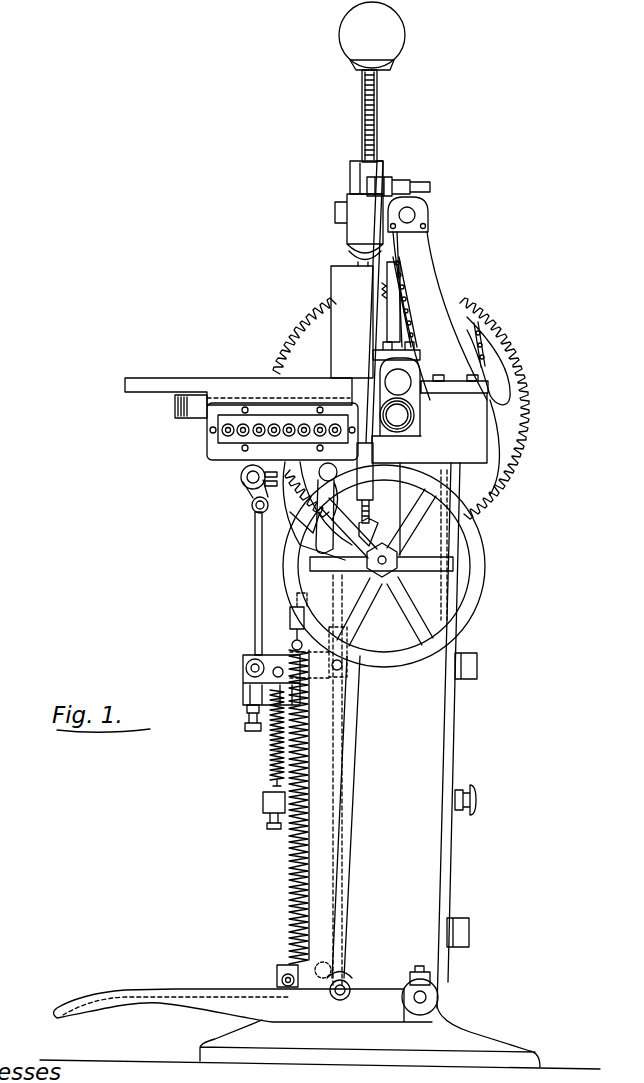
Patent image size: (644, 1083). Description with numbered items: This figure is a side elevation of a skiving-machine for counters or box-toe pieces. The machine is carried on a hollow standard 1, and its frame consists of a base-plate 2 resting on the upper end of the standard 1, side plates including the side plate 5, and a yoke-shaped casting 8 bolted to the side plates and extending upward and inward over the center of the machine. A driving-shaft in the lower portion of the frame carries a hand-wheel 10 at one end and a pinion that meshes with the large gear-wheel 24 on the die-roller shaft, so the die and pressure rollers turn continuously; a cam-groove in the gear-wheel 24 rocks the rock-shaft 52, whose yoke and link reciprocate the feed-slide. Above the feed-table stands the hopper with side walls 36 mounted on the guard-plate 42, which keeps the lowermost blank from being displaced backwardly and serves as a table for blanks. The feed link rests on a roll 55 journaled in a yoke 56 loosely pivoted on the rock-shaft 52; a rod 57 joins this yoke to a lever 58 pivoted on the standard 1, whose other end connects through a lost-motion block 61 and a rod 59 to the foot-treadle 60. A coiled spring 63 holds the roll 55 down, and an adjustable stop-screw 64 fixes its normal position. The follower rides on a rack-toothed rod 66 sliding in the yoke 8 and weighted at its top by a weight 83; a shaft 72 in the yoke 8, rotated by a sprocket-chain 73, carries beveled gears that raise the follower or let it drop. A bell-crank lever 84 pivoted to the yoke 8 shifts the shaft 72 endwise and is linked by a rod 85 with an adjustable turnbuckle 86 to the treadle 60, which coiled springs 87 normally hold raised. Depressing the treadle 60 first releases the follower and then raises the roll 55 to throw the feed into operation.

The hollow case or standard 1 is at (455, 760).
The base-plate 2 is at (429, 573).
The side plate 5 is at (432, 540).
The yoke-shaped casting 8 is at (440, 263).
The hand-wheel 10 is at (471, 582).
The large gear-wheel 24 is at (520, 411).
The side walls 36 is at (336, 278).
The guard-plate 42 is at (200, 385).
The rock-shaft 52 is at (330, 481).
The roll 55 is at (245, 483).
The yoke 56 is at (255, 506).
The rod 57 is at (256, 551).
The lever 58 is at (262, 661).
The rod 59 is at (335, 804).
The foot-treadle 60 is at (165, 992).
The block 61 is at (343, 662).
The coiled spring 63 is at (270, 748).
The adjustable stop-screw 64 is at (243, 722).
The rod 66 is at (378, 125).
The shaft 72 is at (415, 214).
The sprocket-chain 73 is at (412, 319).
The weight 83 is at (400, 45).
The bell-crank lever 84 is at (405, 178).
The rod 85 is at (355, 740).
The adjustable turnbuckle 86 is at (372, 468).
The coiled springs 87 is at (290, 856).